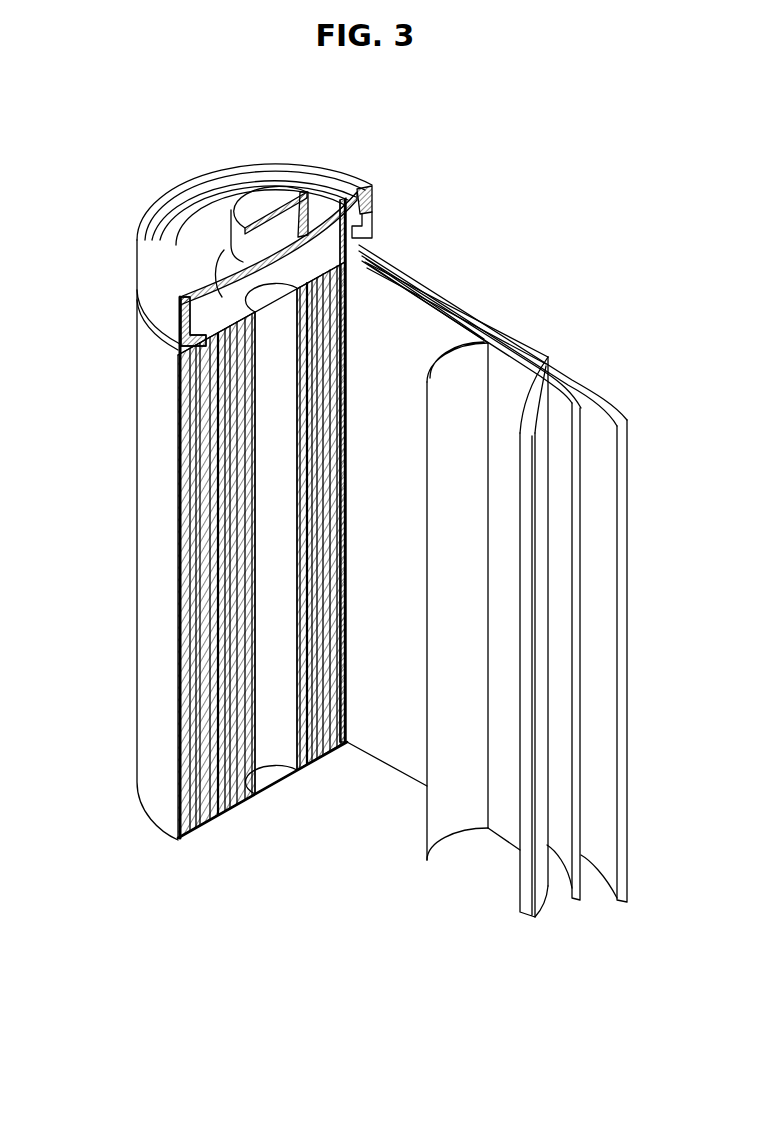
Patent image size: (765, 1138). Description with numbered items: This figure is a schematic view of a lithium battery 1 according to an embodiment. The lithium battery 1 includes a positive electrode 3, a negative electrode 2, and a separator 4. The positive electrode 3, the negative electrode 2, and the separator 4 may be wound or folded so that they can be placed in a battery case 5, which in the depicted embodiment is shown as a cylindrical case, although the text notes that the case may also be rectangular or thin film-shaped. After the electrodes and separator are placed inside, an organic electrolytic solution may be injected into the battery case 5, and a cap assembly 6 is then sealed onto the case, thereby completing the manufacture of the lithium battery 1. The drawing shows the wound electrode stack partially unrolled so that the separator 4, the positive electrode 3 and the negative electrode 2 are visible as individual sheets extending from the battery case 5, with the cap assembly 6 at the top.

The lithium battery 1 is at (505, 179).
The negative electrode 2 is at (605, 392).
The positive electrode 3 is at (535, 388).
The separator 4 is at (458, 382).
The battery case 5 is at (147, 542).
The cap assembly 6 is at (248, 202).